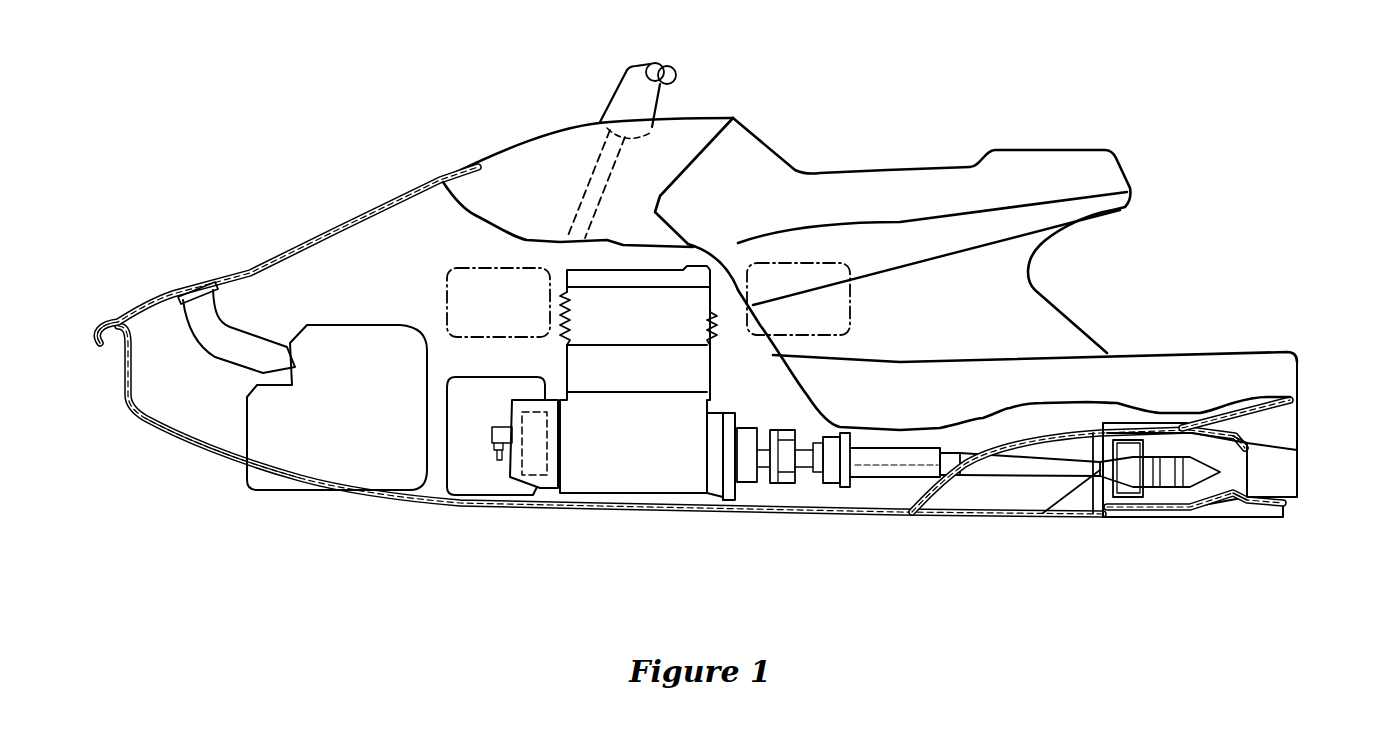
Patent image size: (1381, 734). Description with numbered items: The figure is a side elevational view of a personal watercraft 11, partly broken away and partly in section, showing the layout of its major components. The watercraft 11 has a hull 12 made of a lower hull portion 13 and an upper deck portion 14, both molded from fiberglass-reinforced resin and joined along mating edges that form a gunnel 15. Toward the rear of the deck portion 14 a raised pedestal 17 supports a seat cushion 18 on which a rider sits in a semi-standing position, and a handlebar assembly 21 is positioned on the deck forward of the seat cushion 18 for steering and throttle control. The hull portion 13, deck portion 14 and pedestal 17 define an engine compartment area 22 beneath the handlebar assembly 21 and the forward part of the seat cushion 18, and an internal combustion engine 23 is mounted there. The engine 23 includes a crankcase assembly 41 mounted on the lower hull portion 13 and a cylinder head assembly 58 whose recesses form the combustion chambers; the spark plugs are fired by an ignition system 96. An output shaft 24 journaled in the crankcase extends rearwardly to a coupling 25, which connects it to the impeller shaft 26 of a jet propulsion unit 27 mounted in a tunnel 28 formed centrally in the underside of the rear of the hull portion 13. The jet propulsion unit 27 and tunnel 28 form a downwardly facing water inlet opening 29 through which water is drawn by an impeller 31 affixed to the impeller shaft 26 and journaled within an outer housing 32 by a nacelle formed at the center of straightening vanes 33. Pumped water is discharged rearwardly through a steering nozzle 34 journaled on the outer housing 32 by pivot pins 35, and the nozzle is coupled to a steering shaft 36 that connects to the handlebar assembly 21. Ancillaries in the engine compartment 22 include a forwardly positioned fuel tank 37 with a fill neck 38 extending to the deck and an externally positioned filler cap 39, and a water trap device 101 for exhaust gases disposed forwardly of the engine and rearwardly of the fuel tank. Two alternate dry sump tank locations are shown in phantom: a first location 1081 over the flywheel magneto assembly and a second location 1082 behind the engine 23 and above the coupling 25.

The personal watercraft 11 is at (1067, 60).
The hull 12 is at (130, 397).
The lower hull portion 13 is at (207, 450).
The upper deck portion 14 is at (277, 253).
The gunnel 15 is at (97, 327).
The raised pedestal 17 is at (1050, 303).
The seat cushion 18 is at (870, 180).
The handlebar assembly 21 is at (670, 73).
The engine compartment area 22 is at (403, 287).
The internal combustion engine 23 is at (640, 270).
The output shaft 24 is at (763, 452).
The coupling 25 is at (778, 483).
The impeller shaft 26 is at (1027, 477).
The jet propulsion unit 27 is at (1093, 532).
The tunnel 28 is at (1297, 423).
The water inlet opening 29 is at (958, 507).
The impeller 31 is at (1130, 490).
The outer housing 32 is at (1203, 517).
The straightening vanes 33 is at (1170, 447).
The steering nozzle 34 is at (1293, 440).
The pivot pins 35 is at (1240, 437).
The steering shaft 36 is at (583, 197).
The fuel tank 37 is at (390, 332).
The fill neck 38 is at (227, 318).
The filler cap 39 is at (193, 283).
The crankcase assembly 41 is at (625, 473).
The cylinder head assembly 58 is at (590, 315).
The ignition system 96 is at (543, 480).
The water trap device 101 is at (460, 385).
The first alternate dry sump tank location 1081 is at (468, 267).
The second alternate dry sump tank location 1082 is at (853, 297).